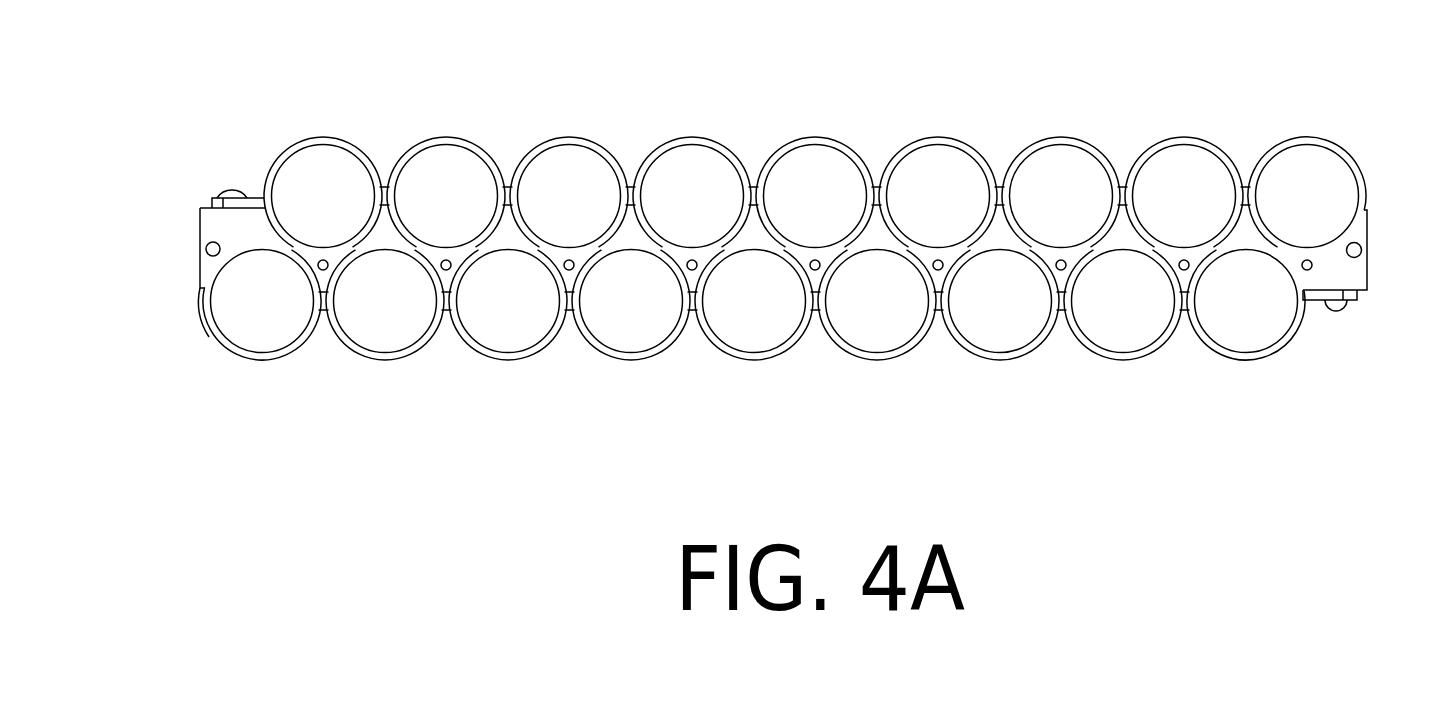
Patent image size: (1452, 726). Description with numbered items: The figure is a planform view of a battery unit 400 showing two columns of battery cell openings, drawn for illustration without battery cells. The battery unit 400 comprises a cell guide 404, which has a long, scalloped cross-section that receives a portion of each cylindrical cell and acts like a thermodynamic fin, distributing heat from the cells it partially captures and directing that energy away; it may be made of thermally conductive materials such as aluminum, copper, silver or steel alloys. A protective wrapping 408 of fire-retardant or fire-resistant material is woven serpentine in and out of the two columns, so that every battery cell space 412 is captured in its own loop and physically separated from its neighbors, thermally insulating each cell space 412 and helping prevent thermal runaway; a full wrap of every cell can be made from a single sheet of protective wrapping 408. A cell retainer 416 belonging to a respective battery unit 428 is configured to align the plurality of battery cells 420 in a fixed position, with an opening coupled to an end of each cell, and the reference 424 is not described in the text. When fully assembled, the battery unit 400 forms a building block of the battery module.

The battery unit 400 is at (759, 252).
The cell guide 404 is at (169, 263).
The protective wrapping 408 is at (818, 145).
The battery cell space 412 is at (1310, 165).
The cell retainer 416 is at (197, 258).
The plurality of battery cells 420 is at (1423, 222).
The upper row of cell holders 424 is at (797, 137).
The battery unit 428 is at (228, 343).